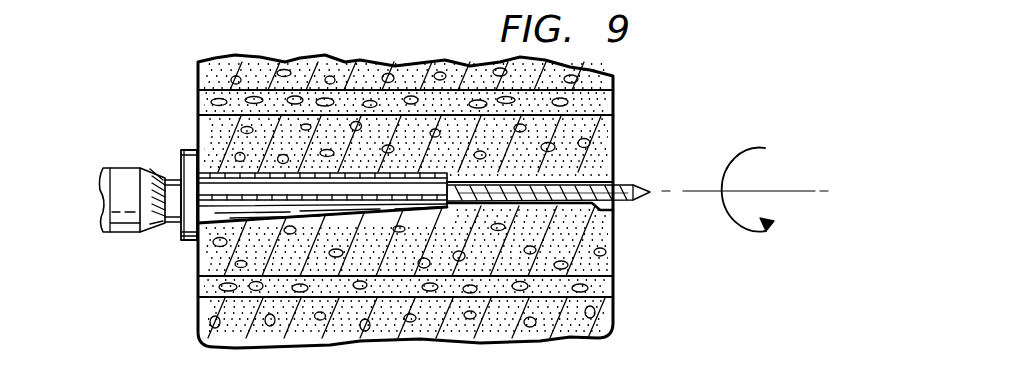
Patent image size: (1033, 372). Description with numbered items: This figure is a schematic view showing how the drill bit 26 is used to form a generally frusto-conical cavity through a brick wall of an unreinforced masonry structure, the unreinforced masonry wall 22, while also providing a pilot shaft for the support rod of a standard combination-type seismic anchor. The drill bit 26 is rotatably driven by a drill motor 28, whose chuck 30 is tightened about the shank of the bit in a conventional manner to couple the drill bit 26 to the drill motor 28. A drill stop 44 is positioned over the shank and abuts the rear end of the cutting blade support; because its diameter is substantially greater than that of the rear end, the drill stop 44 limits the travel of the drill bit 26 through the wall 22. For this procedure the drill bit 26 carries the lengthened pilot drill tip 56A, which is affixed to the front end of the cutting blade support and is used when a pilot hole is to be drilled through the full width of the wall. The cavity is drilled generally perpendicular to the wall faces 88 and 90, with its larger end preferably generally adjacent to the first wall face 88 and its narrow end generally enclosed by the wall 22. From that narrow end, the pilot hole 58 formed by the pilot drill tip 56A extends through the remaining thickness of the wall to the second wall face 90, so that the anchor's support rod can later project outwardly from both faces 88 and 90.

The unreinforced masonry wall 22 is at (624, 104).
The drill bit 26 is at (322, 168).
The drill motor 28 is at (107, 165).
The chuck 30 is at (147, 222).
The drill stop 44 is at (190, 150).
The pilot drill tip 56A is at (633, 183).
The pilot hole 58 is at (614, 228).
The first wall face 88 is at (196, 262).
The second wall face 90 is at (614, 265).